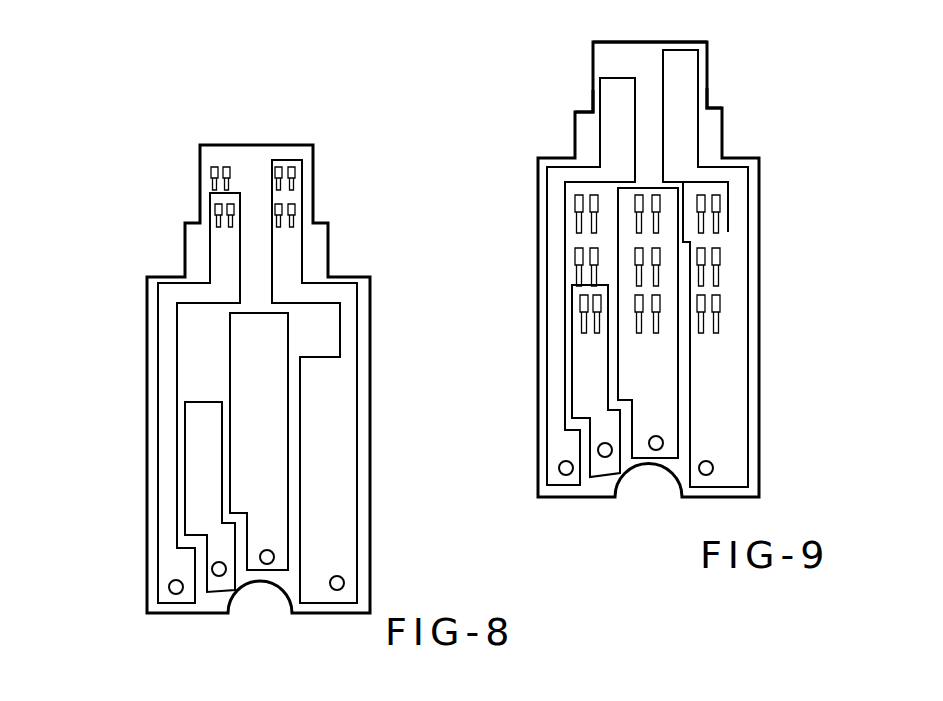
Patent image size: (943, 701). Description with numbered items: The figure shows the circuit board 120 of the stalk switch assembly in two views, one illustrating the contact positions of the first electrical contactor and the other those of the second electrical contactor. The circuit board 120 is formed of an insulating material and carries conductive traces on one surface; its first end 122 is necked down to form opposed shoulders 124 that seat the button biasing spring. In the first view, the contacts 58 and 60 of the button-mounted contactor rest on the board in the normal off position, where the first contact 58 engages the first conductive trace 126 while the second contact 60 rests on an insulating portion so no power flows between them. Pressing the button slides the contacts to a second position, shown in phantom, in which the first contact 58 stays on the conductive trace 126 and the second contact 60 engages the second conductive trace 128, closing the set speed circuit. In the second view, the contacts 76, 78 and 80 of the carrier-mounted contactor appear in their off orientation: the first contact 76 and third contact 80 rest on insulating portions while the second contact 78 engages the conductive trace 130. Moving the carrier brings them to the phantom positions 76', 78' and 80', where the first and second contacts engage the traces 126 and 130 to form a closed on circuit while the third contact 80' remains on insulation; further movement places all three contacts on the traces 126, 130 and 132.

In FIG. 8, the first electrical contact 58 is at (290, 165).
In FIG. 8, the second electrical contact 60 is at (228, 207).
In FIG. 9, the first electrical contact 76 is at (758, 190).
In FIG. 9, the first electrical contact in second position 76' is at (772, 270).
In FIG. 9, the second electrical contact 78 is at (712, 173).
In FIG. 9, the second electrical contact in second position 78' is at (734, 232).
In FIG. 9, the third electrical contact 80 is at (551, 166).
In FIG. 9, the third electrical contact in second position 80' is at (534, 232).
In FIG. 8, the circuit board 120 is at (147, 320).
In FIG. 9, the circuit board 120 is at (537, 172).
In FIG. 9, the first end of the circuit board 122 is at (690, 38).
In FIG. 9, the shoulders 124 is at (592, 110).
In FIG. 8, the first conductive trace 126 is at (343, 410).
In FIG. 9, the first conductive trace 126 is at (737, 396).
In FIG. 8, the second conductive trace 128 is at (222, 263).
In FIG. 9, the second conductive trace 128 is at (552, 265).
In FIG. 9, the conductive trace 130 is at (670, 427).
In FIG. 9, the conductive trace 132 is at (580, 367).